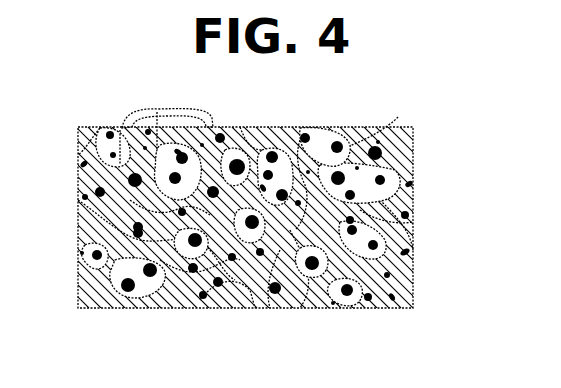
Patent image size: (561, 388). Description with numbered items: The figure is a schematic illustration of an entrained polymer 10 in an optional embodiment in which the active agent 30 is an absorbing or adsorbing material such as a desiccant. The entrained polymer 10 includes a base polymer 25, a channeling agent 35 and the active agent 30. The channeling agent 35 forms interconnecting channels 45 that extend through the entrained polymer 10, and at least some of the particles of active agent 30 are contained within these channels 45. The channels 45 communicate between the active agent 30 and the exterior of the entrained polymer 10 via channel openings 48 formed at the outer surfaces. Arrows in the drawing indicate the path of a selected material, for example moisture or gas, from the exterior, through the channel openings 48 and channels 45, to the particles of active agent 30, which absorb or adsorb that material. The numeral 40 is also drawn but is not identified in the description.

The entrained polymer 10 is at (415, 178).
The base polymer 25 is at (417, 185).
The active agent 30 is at (326, 128).
The channeling agent 35 is at (76, 308).
The binder domain 40 is at (273, 308).
The channels 45 is at (78, 163).
The channel openings 48 is at (174, 112).